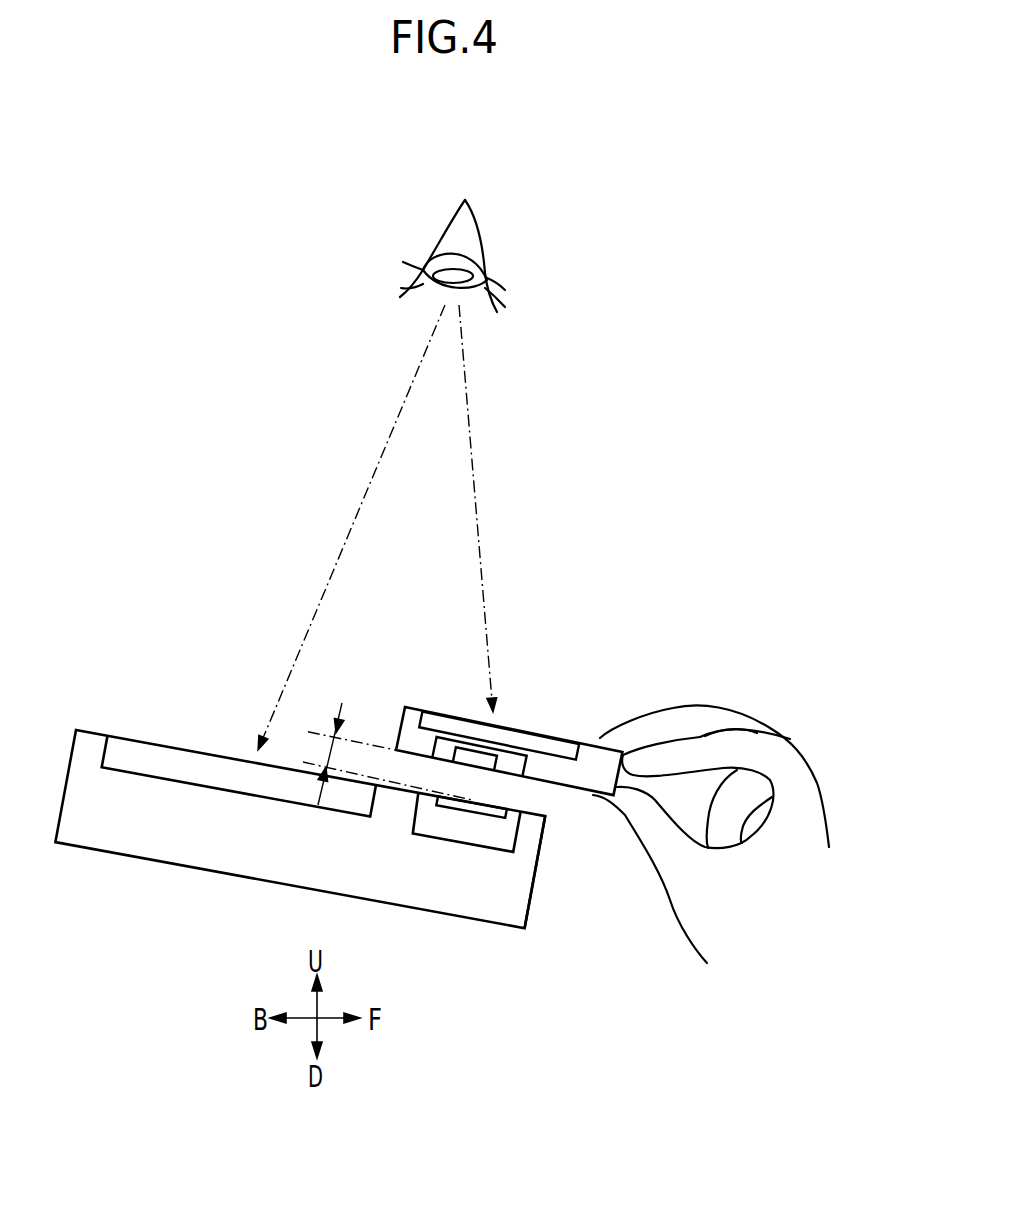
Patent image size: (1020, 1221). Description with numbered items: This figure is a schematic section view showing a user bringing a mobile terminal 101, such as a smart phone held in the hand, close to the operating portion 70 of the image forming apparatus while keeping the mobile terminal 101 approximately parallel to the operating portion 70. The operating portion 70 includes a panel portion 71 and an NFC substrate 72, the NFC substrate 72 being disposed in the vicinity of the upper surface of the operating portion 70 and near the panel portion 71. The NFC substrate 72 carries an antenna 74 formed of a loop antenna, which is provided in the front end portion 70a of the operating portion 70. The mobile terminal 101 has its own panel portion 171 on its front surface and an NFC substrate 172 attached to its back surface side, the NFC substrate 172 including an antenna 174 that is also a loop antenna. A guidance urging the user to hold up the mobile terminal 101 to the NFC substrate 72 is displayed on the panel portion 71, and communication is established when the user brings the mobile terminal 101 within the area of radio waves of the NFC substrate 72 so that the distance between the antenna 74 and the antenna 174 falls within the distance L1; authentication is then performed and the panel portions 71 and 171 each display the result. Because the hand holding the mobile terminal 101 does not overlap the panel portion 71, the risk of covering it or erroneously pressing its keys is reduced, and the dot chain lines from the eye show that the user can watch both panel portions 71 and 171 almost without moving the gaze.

The operating portion 70 is at (103, 675).
The panel portion 71 is at (190, 750).
The NFC substrate 72 is at (433, 837).
The antenna 74 is at (472, 812).
The front end portion 70a is at (537, 873).
The panel portion 171 is at (550, 736).
The NFC substrate 172 is at (523, 765).
The antenna 174 is at (458, 752).
The mobile terminal 101 is at (611, 701).
The distance L1 is at (387, 748).